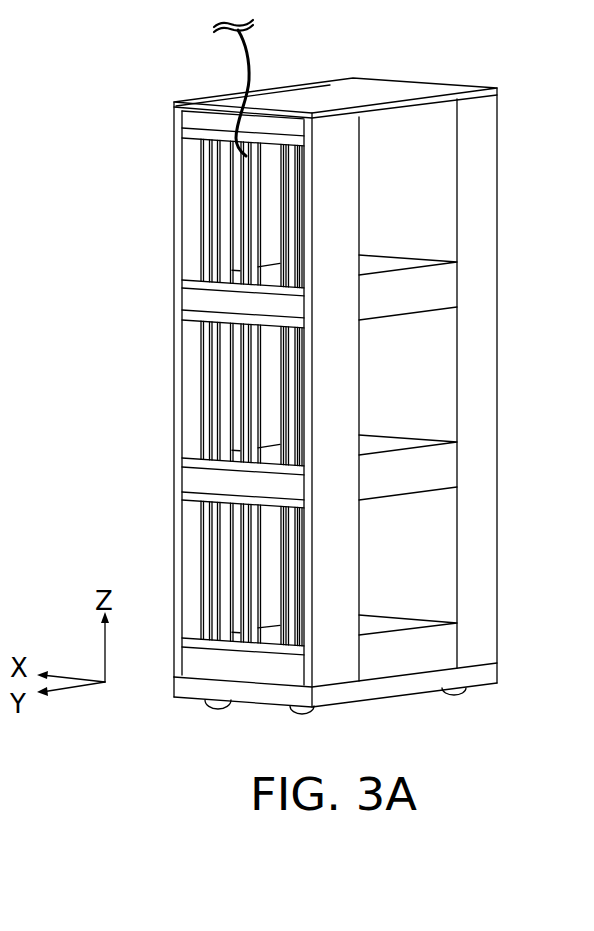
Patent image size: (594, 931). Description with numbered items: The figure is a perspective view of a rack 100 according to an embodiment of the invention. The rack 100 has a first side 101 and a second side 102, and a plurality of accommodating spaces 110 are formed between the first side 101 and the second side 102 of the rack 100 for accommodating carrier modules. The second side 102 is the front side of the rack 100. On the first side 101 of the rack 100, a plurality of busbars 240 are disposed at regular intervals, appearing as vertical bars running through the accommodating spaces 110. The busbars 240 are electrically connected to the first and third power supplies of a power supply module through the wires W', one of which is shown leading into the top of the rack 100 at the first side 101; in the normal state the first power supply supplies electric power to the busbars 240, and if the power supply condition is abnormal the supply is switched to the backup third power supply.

The rack 100 is at (497, 74).
The first side 101 is at (173, 397).
The second side 102 is at (498, 322).
The accommodating spaces 110 is at (420, 205).
The busbars 240 is at (245, 212).
The wires W' is at (210, 88).